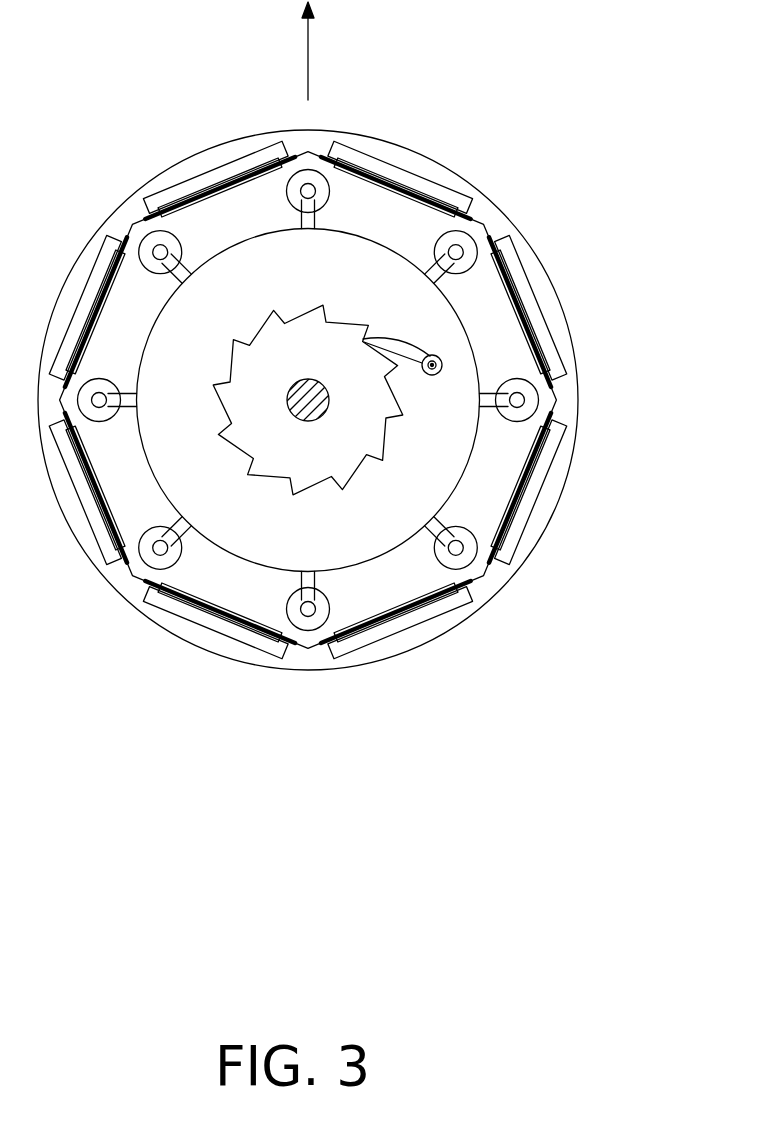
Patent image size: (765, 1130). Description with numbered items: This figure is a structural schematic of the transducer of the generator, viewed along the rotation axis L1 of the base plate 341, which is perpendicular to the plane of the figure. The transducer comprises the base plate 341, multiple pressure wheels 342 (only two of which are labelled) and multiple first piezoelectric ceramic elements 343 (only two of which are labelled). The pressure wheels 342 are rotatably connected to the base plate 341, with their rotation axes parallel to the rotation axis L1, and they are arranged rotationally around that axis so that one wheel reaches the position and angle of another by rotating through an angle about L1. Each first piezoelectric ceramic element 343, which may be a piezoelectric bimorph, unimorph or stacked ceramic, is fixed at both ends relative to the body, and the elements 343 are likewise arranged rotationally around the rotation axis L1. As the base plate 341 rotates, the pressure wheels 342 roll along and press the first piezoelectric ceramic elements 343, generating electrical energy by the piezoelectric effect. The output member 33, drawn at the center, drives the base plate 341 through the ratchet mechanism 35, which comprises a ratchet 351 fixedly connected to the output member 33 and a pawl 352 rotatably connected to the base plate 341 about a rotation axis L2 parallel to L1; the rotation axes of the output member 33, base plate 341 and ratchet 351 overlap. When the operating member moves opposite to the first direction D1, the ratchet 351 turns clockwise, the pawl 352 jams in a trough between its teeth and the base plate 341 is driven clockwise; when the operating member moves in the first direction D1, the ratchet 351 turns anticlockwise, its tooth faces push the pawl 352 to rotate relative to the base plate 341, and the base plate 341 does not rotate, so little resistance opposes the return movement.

The output member 33 is at (307, 422).
The ratchet mechanism 35 is at (354, 412).
The base plate 341 is at (340, 284).
The pressure wheel 342 is at (464, 243).
The first piezoelectric ceramic element 343 is at (398, 177).
The ratchet 351 is at (340, 368).
The pawl 352 is at (407, 350).
The rotation axis of the base plate L1 is at (307, 400).
The rotation axis of the pawl L2 is at (433, 360).
The first direction D1 is at (329, 51).